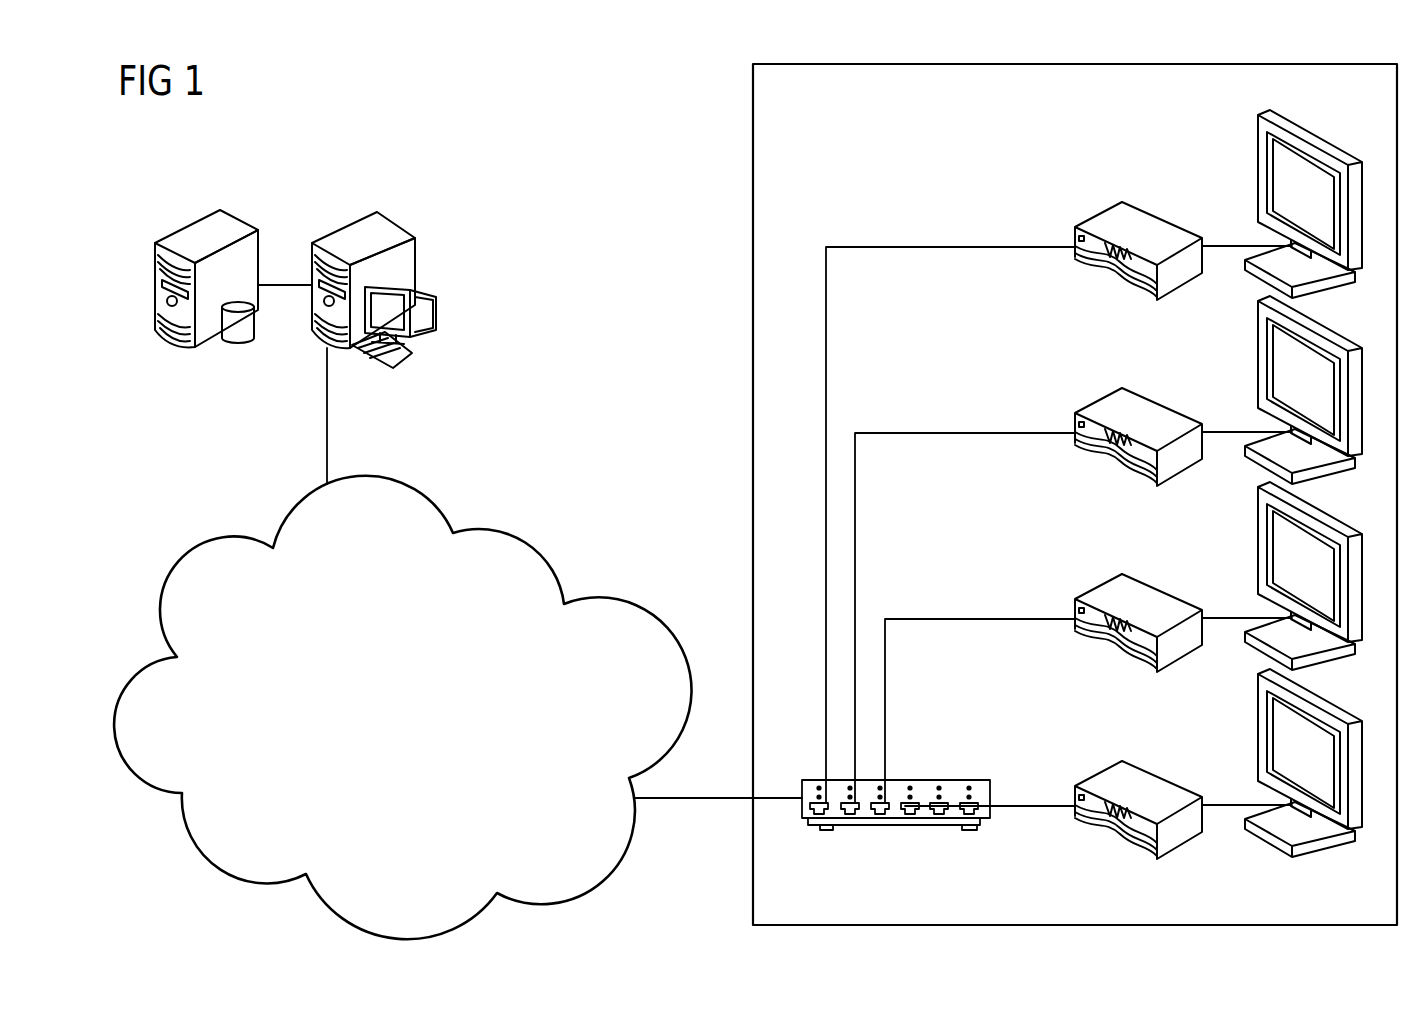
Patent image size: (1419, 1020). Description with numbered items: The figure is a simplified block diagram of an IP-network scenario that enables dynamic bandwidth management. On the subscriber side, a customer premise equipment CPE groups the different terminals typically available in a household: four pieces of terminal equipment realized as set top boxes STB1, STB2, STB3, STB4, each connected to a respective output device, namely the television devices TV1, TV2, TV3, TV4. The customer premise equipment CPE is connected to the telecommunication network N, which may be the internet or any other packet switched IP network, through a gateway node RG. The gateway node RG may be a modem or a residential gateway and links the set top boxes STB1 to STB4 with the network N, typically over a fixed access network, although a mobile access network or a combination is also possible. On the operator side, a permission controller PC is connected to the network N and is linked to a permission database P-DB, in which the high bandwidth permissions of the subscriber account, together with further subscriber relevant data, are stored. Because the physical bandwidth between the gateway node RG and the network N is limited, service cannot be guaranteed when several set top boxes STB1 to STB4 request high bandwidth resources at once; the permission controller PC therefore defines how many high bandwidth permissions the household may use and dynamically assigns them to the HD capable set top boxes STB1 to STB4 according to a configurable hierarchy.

The permission database P-DB is at (227, 222).
The permission controller PC is at (384, 226).
The telecommunication network N is at (388, 478).
The customer premise equipment CPE is at (1075, 494).
The gateway node RG is at (921, 780).
The set top box STB1 is at (1138, 268).
The set top box STB2 is at (1138, 454).
The set top box STB3 is at (1138, 640).
The set top box STB4 is at (1138, 827).
The television device TV1 is at (1284, 204).
The television device TV2 is at (1284, 390).
The television device TV3 is at (1284, 576).
The television device TV4 is at (1284, 763).